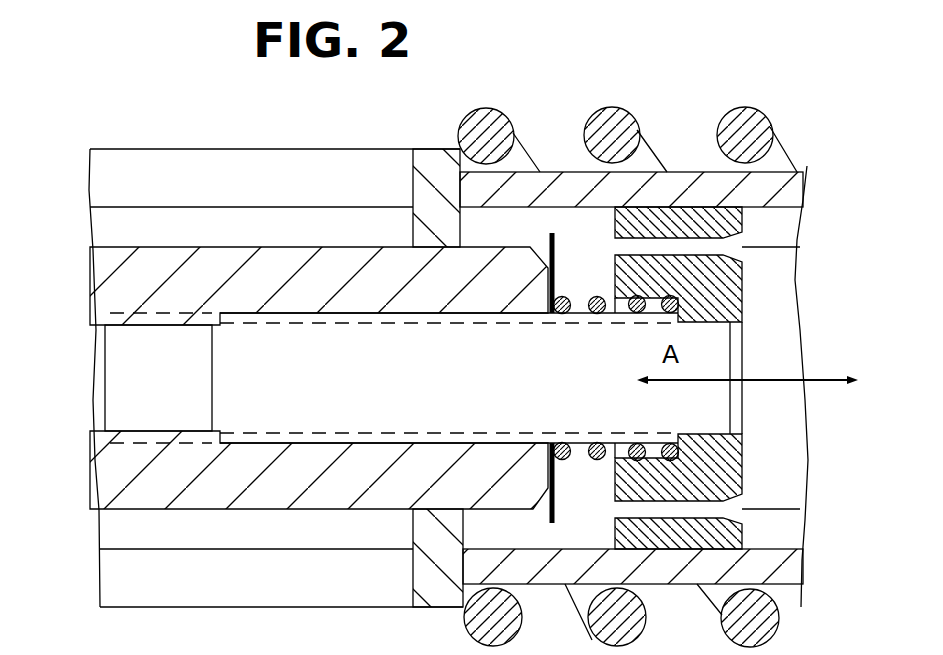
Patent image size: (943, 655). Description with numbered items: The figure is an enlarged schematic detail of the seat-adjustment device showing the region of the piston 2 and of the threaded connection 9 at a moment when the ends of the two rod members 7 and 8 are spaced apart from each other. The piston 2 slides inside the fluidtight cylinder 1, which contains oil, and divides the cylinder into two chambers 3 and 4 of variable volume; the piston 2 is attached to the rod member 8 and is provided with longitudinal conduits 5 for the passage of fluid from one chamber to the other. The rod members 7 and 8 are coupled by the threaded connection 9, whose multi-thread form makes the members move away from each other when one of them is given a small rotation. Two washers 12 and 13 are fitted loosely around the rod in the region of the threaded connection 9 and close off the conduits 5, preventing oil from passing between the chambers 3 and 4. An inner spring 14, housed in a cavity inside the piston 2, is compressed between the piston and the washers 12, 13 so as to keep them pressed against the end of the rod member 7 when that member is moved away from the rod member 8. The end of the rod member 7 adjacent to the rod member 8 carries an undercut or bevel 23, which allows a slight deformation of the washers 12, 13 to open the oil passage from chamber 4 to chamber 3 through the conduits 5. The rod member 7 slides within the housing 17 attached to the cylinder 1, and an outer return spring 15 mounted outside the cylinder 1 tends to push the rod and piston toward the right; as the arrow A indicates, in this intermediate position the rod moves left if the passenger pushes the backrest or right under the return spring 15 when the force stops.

The fluidtight cylinder 1 is at (792, 195).
The piston 2 is at (728, 460).
The chamber 3 is at (578, 225).
The chamber 4 is at (788, 230).
The longitudinal conduits 5 is at (678, 247).
The rod member 7 is at (268, 263).
The rod member 8 is at (797, 288).
The threaded connection 9 is at (196, 352).
The washer 12 is at (576, 511).
The washer 13 is at (545, 524).
The inner spring 14 is at (638, 447).
The return spring 15 is at (628, 132).
The housing 17 is at (154, 165).
The undercut or bevel 23 is at (536, 224).